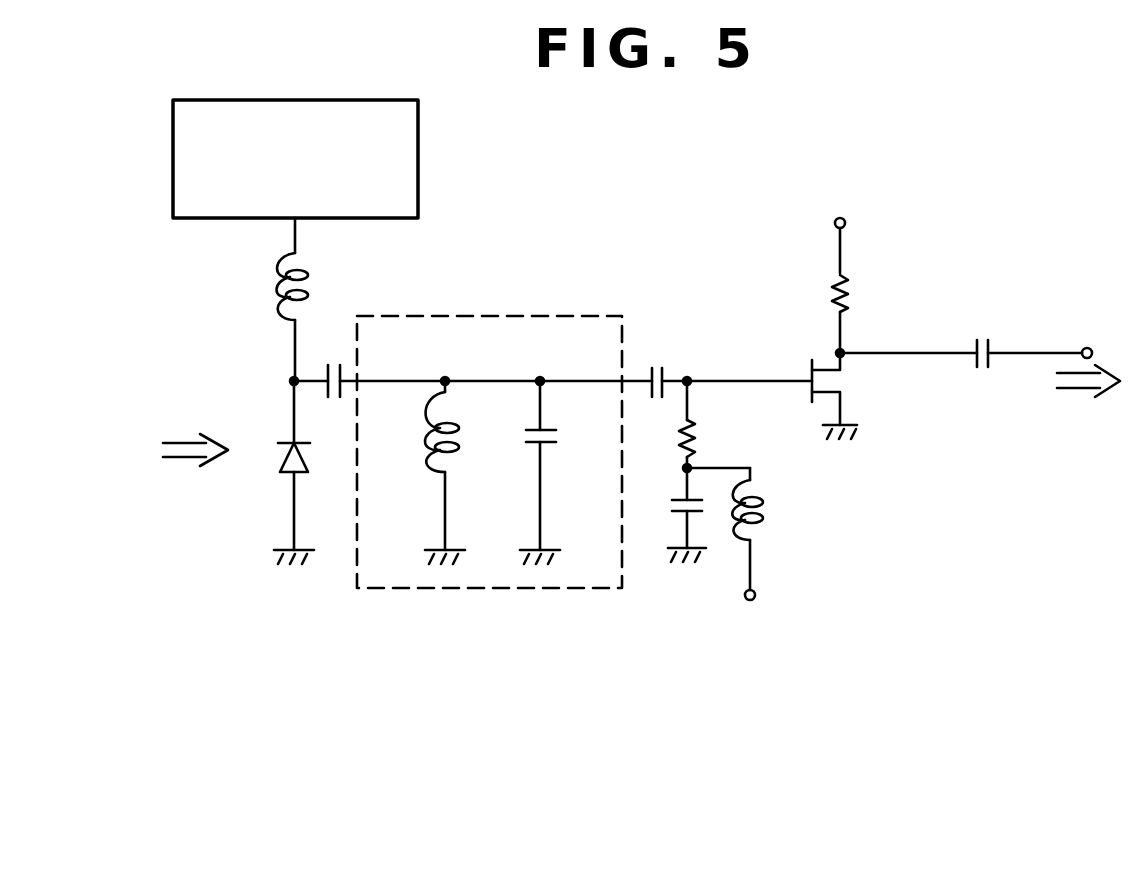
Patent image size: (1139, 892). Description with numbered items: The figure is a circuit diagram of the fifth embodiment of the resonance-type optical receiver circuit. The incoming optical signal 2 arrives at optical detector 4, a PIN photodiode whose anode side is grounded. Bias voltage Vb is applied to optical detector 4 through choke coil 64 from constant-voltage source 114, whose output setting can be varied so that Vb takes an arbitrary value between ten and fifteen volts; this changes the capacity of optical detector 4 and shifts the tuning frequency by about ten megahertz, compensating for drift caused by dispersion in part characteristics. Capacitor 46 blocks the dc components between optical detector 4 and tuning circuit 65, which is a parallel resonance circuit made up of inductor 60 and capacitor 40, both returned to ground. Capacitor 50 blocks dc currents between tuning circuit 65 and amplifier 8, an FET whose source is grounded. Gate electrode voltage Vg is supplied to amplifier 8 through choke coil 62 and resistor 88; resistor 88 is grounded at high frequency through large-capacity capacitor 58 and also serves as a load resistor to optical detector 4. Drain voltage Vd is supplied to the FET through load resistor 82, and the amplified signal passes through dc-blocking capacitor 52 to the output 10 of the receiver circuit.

The input signal 2 is at (184, 438).
The optical detector 4 is at (283, 473).
The capacitor 46 is at (331, 362).
The choke coil 64 is at (306, 280).
The constant-voltage source 114 is at (418, 108).
The tuning circuit 65 is at (466, 312).
The inductor 60 is at (455, 438).
The capacitor 40 is at (558, 437).
The capacitor 50 is at (653, 365).
The resistor 88 is at (702, 440).
The capacitor 58 is at (668, 509).
The choke coil 62 is at (762, 508).
The load resistor 82 is at (828, 296).
The amplifier 8 is at (835, 381).
The capacitor 52 is at (980, 338).
The output signal 10 is at (1078, 392).